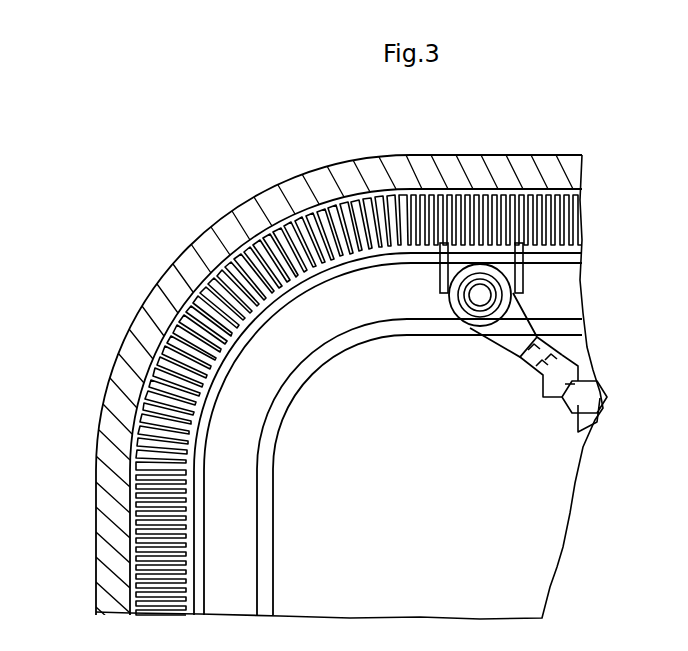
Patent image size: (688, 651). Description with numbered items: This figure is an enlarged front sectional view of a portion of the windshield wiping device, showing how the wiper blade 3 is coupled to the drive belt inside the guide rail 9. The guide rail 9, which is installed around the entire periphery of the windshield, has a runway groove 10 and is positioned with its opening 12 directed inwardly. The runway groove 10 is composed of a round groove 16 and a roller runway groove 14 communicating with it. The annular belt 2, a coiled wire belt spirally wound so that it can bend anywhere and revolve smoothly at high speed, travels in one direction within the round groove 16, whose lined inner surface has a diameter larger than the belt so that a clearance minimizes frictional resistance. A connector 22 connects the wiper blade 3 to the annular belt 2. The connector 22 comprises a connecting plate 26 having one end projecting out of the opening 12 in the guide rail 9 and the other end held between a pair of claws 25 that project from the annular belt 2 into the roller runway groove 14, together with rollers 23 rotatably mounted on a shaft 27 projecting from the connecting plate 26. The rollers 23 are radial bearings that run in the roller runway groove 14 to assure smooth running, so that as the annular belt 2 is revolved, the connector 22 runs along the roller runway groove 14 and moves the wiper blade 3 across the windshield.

The annular belt 2 is at (365, 200).
The wiper blade 3 is at (566, 413).
The guide rail 9 is at (237, 213).
The runway groove 10 is at (227, 255).
The opening 12 is at (270, 542).
The roller runway groove 14 is at (242, 452).
The round groove 16 is at (133, 587).
The connector 22 is at (493, 343).
The rollers 23 is at (462, 318).
The claws 25 is at (440, 280).
The connecting plate 26 is at (522, 328).
The shaft 27 is at (478, 292).